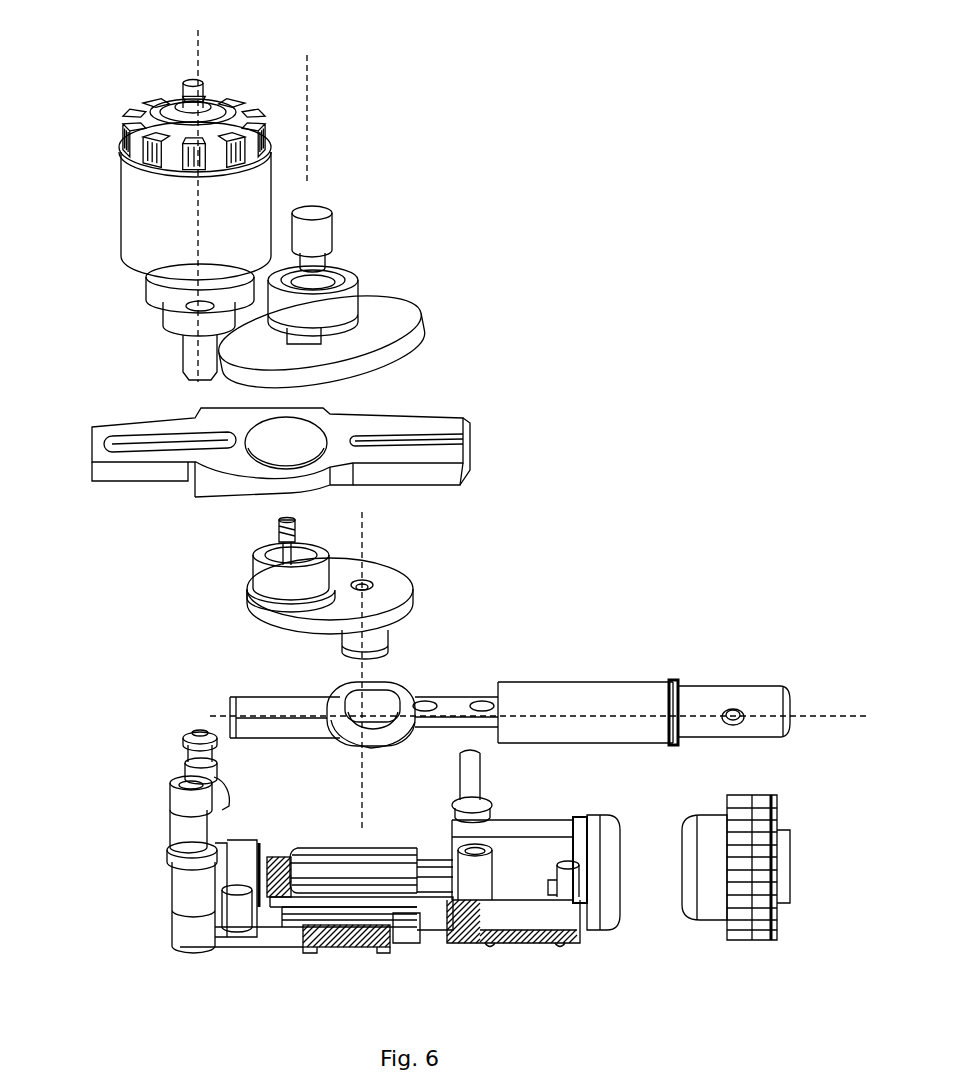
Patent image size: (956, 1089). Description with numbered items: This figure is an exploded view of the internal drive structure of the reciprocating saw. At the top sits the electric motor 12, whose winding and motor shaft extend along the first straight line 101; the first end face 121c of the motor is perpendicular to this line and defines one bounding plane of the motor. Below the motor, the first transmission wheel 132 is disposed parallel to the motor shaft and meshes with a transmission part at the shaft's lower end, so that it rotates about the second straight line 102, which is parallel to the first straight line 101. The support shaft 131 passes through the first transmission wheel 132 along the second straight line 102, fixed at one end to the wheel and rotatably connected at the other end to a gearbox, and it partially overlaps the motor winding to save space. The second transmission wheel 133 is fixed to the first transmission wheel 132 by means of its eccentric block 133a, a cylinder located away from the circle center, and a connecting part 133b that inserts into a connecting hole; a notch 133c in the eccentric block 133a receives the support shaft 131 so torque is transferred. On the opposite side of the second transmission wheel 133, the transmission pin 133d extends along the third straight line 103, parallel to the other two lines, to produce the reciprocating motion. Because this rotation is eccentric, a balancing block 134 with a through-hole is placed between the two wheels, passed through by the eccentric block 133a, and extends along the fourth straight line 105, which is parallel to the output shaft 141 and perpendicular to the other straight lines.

The electric motor 12 is at (125, 214).
The first straight line 101 is at (190, 58).
The first end face 121c is at (203, 83).
The second straight line 102 is at (308, 98).
The support shaft 131 is at (335, 250).
The first transmission wheel 132 is at (420, 325).
The balancing block 134 is at (468, 410).
The second transmission wheel 133 is at (420, 592).
The eccentric block 133a is at (253, 590).
The connecting part 133b is at (268, 542).
The notch 133c is at (360, 562).
The transmission pin 133d is at (390, 650).
The third straight line 103 is at (340, 666).
The fourth straight line 105 is at (820, 712).
The output shaft 141 is at (225, 712).